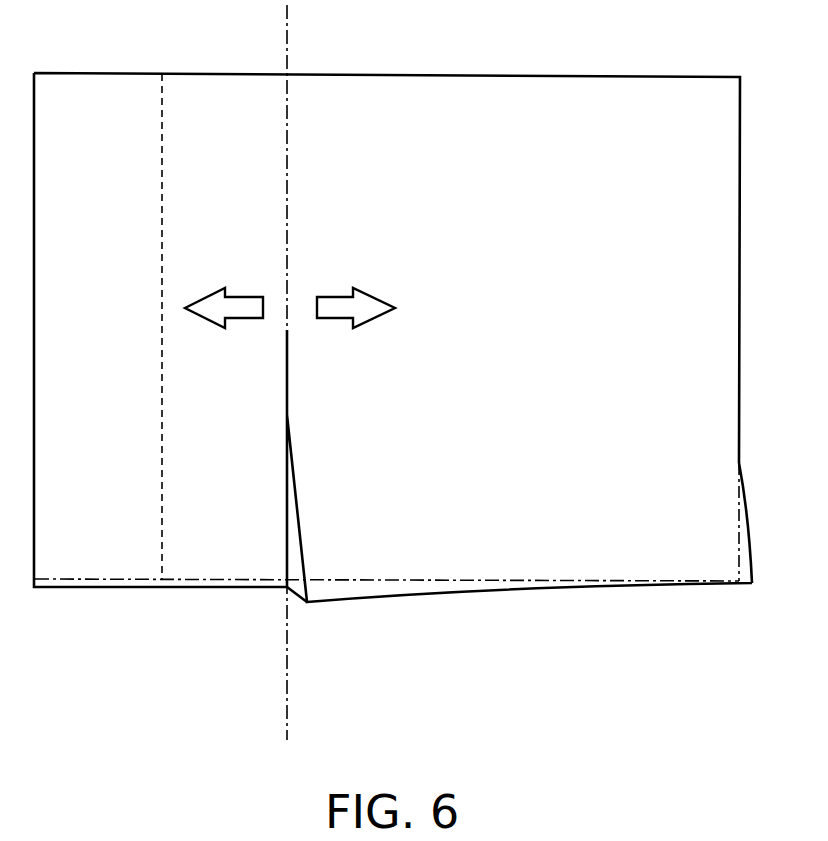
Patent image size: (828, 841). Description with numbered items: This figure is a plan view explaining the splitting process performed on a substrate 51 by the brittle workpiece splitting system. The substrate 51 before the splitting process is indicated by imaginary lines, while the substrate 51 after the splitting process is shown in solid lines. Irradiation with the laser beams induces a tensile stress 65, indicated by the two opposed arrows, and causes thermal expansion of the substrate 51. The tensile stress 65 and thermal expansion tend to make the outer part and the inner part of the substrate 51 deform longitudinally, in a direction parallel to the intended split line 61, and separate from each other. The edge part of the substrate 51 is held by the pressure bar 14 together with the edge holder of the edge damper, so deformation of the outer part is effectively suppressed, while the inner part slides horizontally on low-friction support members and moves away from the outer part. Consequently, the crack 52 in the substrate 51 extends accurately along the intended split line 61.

The pressure bar 14 is at (387, 300).
The substrate 51 is at (450, 580).
The crack 52 is at (290, 553).
The intended split line 61 is at (288, 711).
The tensile stress 65 is at (248, 297).